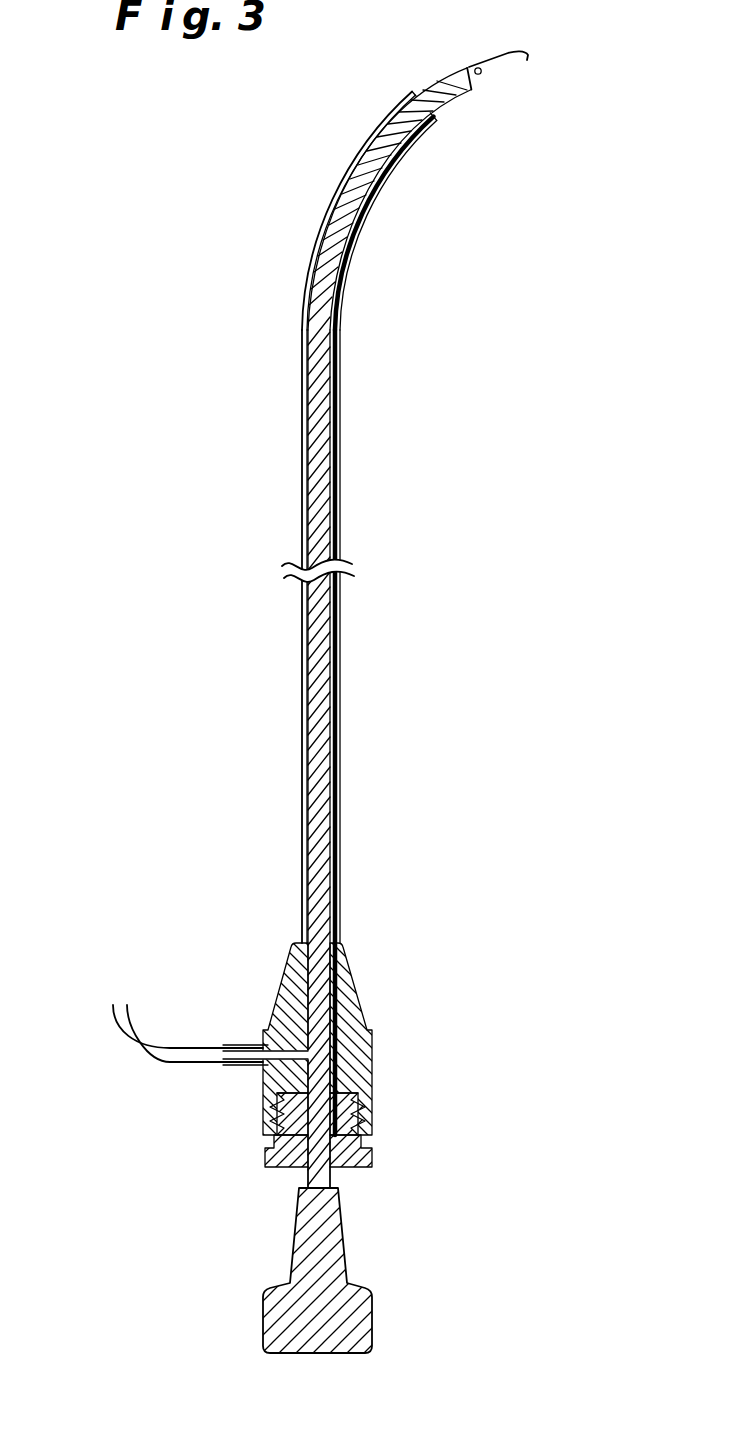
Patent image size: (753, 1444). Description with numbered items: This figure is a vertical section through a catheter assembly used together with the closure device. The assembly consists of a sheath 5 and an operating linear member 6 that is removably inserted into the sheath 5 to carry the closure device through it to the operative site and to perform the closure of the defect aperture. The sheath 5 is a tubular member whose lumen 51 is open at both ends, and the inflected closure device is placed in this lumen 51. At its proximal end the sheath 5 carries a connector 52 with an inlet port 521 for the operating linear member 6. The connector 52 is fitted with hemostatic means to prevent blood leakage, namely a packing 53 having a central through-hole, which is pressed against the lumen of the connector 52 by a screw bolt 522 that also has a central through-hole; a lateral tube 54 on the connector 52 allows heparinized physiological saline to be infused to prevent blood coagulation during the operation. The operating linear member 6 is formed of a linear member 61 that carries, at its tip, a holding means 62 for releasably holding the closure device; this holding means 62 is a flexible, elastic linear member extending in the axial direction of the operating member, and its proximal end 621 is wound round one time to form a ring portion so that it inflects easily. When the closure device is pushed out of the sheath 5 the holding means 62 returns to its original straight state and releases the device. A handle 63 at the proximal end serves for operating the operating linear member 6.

The sheath 5 is at (337, 710).
The lumen 51 is at (320, 801).
The connector 52 is at (372, 1053).
The inlet port 521 is at (318, 1160).
The screw bolt 522 is at (373, 1153).
The packing 53 is at (268, 1108).
The lateral tube 54 is at (137, 1055).
The operating linear member 6 is at (333, 488).
The linear member 61 is at (338, 318).
The holding means 62 is at (513, 57).
The proximal end 621 is at (479, 75).
The handle 63 is at (372, 1312).